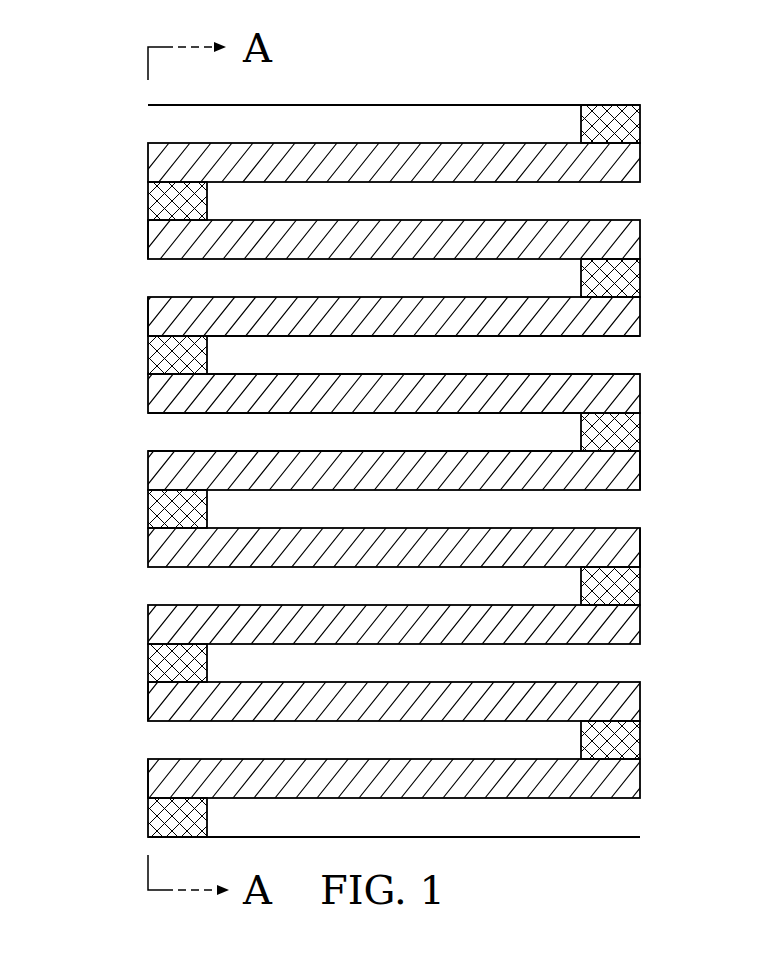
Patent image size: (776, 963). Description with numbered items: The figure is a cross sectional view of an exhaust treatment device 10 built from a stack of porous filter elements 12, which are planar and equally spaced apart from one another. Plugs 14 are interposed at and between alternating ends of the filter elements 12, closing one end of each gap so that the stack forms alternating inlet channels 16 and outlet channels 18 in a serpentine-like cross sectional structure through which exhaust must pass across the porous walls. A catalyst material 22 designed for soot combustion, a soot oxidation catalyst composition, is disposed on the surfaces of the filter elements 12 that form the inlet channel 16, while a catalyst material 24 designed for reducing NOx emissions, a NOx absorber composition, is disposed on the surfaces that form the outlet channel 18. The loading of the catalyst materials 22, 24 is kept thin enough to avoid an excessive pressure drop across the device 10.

The exhaust treatment device 10 is at (128, 95).
The porous filter element 12 is at (634, 170).
The plug 14 is at (633, 113).
The inlet channel 16 is at (170, 436).
The outlet channel 18 is at (620, 357).
The catalyst material for soot combustion 22 is at (173, 297).
The catalyst material for reducing NOx emissions 24 is at (620, 528).